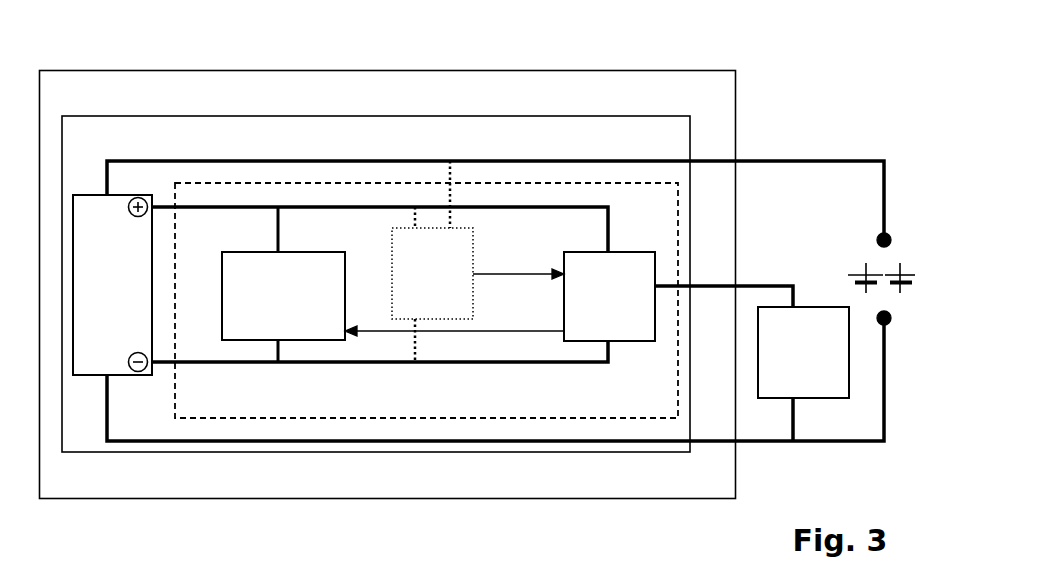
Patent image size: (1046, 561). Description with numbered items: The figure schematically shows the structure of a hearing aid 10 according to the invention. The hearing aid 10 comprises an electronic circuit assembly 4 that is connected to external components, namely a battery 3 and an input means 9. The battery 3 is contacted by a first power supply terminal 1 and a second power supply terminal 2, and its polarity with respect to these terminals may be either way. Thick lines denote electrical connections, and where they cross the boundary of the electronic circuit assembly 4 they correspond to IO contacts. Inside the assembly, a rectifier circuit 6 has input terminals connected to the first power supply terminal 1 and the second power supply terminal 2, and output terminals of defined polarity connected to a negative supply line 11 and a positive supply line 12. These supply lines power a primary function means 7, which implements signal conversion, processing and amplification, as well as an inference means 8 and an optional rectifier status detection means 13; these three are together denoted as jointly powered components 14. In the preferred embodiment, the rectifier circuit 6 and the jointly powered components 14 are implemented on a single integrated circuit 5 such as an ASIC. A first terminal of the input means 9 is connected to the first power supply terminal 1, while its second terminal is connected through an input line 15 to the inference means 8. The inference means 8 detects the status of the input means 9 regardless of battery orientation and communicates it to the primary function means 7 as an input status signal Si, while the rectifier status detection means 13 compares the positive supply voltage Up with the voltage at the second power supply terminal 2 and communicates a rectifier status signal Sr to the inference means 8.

The first power supply terminal 1 is at (769, 443).
The second power supply terminal 2 is at (766, 161).
The battery 3 is at (846, 256).
The electronic circuit assembly 4 is at (707, 102).
The integrated circuit 5 is at (661, 148).
The rectifier circuit 6 is at (86, 226).
The primary function means 7 is at (232, 282).
The inference means 8 is at (578, 284).
The input means 9 is at (772, 340).
The hearing aid 10 is at (820, 77).
The negative supply line 11 is at (240, 363).
The positive supply line 12 is at (237, 208).
The rectifier status detection means 13 is at (409, 262).
The jointly powered components 14 is at (640, 216).
The input line 15 is at (709, 283).